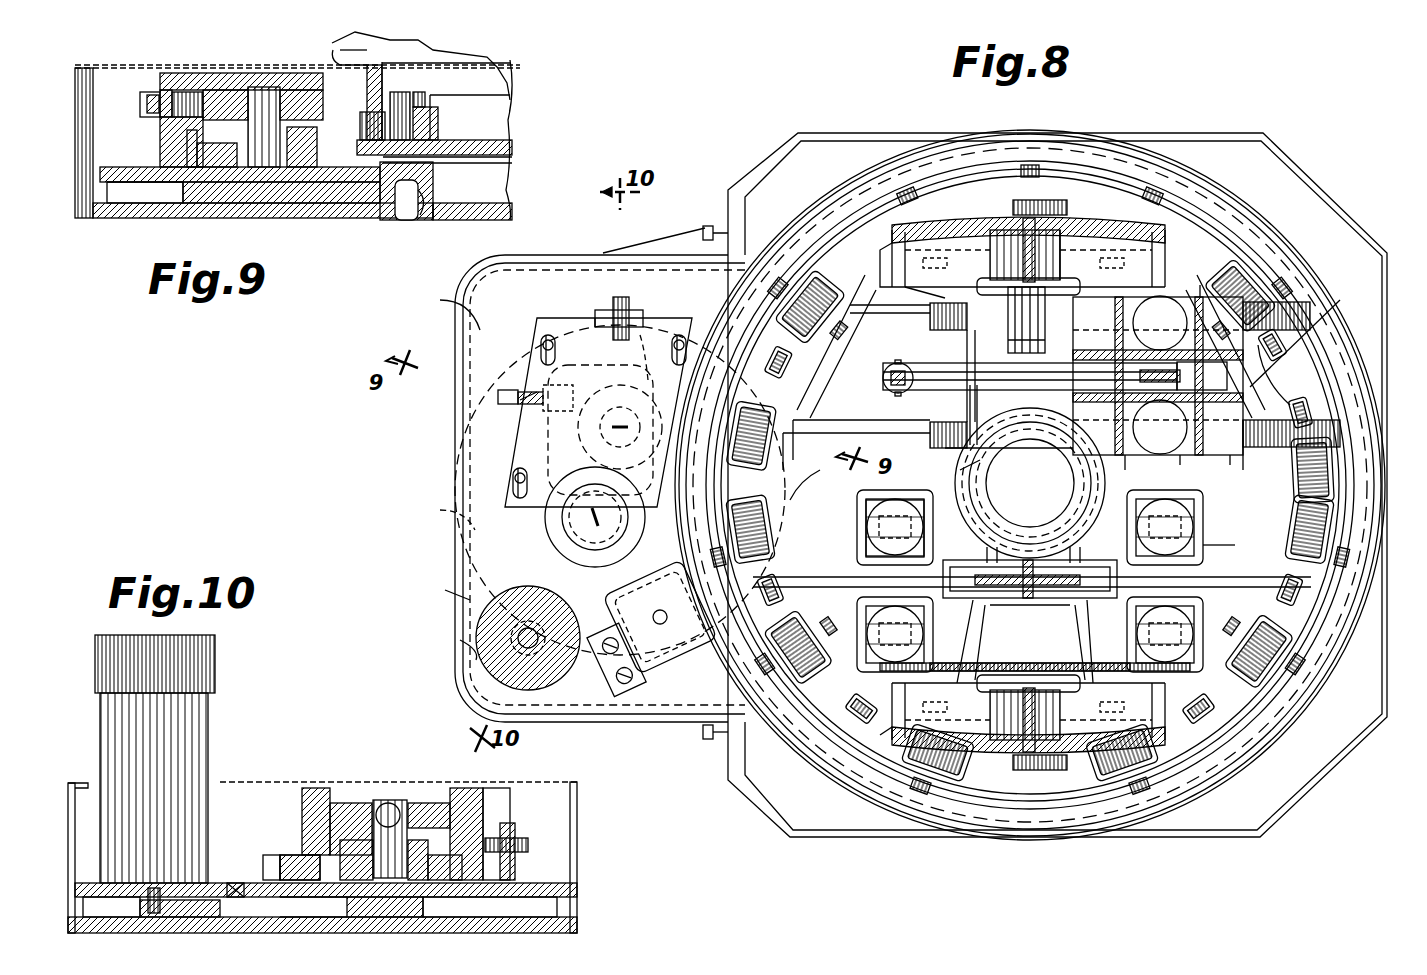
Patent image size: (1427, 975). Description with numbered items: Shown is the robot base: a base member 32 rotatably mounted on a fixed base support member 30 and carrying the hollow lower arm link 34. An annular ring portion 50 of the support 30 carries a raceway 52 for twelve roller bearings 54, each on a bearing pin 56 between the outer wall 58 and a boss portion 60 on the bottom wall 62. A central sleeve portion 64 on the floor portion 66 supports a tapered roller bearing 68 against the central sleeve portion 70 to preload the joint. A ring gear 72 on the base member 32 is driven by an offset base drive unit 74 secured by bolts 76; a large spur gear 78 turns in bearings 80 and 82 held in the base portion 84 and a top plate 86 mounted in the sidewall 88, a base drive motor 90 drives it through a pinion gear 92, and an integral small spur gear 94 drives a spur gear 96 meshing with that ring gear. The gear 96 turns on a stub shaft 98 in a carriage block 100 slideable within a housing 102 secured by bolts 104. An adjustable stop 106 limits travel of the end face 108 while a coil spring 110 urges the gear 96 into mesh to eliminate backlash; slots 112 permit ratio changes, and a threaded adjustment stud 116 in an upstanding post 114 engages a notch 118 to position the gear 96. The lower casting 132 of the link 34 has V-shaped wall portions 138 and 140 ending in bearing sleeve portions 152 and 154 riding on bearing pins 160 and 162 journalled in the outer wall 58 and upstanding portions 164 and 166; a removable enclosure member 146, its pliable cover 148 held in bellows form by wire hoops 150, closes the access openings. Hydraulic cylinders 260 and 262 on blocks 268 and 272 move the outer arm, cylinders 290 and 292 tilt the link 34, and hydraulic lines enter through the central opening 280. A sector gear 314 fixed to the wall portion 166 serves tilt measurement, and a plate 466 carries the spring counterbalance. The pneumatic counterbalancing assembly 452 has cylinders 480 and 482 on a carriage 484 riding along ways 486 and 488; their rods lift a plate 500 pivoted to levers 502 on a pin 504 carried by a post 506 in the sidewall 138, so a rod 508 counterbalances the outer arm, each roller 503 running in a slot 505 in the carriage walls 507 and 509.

In FIG. 8, the base support member 30 is at (1323, 172).
In FIG. 9, the base support member 30 is at (382, 220).
In FIG. 8, the base member 32 is at (1340, 580).
In FIG. 9, the base member 32 is at (512, 148).
In FIG. 8, the turret or lower arm link 34 is at (1070, 225).
In FIG. 9, the upstanding annular ring portion 50 is at (423, 216).
In FIG. 9, the flat roller bearing raceway 52 is at (430, 158).
In FIG. 8, the roller bearings 54 is at (785, 320).
In FIG. 9, the roller bearings 54 is at (402, 98).
In FIG. 8, the bearing pin 56 is at (840, 340).
In FIG. 9, the bearing pin 56 is at (438, 120).
In FIG. 8, the outer wall 58 is at (1345, 490).
In FIG. 9, the outer wall 58 is at (367, 86).
In FIG. 8, the upstanding annular boss portion 60 is at (807, 476).
In FIG. 9, the upstanding annular boss portion 60 is at (425, 98).
In FIG. 8, the bottom wall 62 is at (1226, 558).
In FIG. 9, the bottom wall 62 is at (490, 142).
In FIG. 8, the central sleeve portion 64 is at (1078, 538).
In FIG. 9, the floor portion 66 is at (485, 210).
In FIG. 8, the tapered roller bearing 68 is at (985, 540).
In FIG. 8, the upstanding central sleeve portion 70 is at (956, 468).
In FIG. 8, the ring gear 72 is at (905, 778).
In FIG. 9, the ring gear 72 is at (352, 140).
In FIG. 8, the offset base drive unit 74 is at (458, 555).
In FIG. 9, the offset base drive unit 74 is at (118, 222).
In FIG. 10, the offset base drive unit 74 is at (92, 936).
In FIG. 8, the bolts 76 is at (708, 226).
In FIG. 8, the large spur gear 78 is at (439, 593).
In FIG. 9, the large spur gear 78 is at (180, 193).
In FIG. 10, the large spur gear 78 is at (420, 915).
In FIG. 10, the bearing 80 is at (250, 930).
In FIG. 8, the bearing 82 is at (575, 570).
In FIG. 10, the bearing 82 is at (236, 883).
In FIG. 9, the base portion 84 is at (246, 215).
In FIG. 10, the base portion 84 is at (488, 920).
In FIG. 8, the top plate 86 is at (449, 303).
In FIG. 9, the top plate 86 is at (125, 170).
In FIG. 10, the top plate 86 is at (548, 888).
In FIG. 8, the sidewall 88 is at (439, 519).
In FIG. 9, the sidewall 88 is at (105, 190).
In FIG. 10, the sidewall 88 is at (560, 902).
In FIG. 8, the base drive motor 90 is at (476, 660).
In FIG. 10, the base drive motor 90 is at (98, 672).
In FIG. 8, the pinion gear 92 is at (476, 628).
In FIG. 10, the pinion gear 92 is at (140, 910).
In FIG. 8, the small spur gear 94 is at (570, 535).
In FIG. 10, the small spur gear 94 is at (263, 860).
In FIG. 8, the spur gear 96 is at (650, 340).
In FIG. 9, the spur gear 96 is at (197, 150).
In FIG. 10, the spur gear 96 is at (445, 880).
In FIG. 8, the stub shaft 98 is at (625, 445).
In FIG. 9, the stub shaft 98 is at (264, 170).
In FIG. 10, the stub shaft 98 is at (385, 878).
In FIG. 8, the carriage block 100 is at (695, 585).
In FIG. 9, the carriage block 100 is at (290, 90).
In FIG. 10, the carriage block 100 is at (425, 803).
In FIG. 8, the housing 102 is at (550, 318).
In FIG. 9, the housing 102 is at (165, 73).
In FIG. 10, the housing 102 is at (312, 790).
In FIG. 8, the bolts 104 is at (548, 345).
In FIG. 8, the adjustable stop 106 is at (498, 397).
In FIG. 9, the adjustable stop 106 is at (145, 95).
In FIG. 10, the adjustable stop 106 is at (388, 800).
In FIG. 8, the end face 108 is at (540, 400).
In FIG. 9, the end face 108 is at (228, 90).
In FIG. 8, the coil spring 110 is at (520, 370).
In FIG. 9, the coil spring 110 is at (185, 92).
In FIG. 10, the coil spring 110 is at (352, 803).
In FIG. 8, the slots 112 is at (540, 350).
In FIG. 8, the upstanding post 114 is at (610, 310).
In FIG. 10, the upstanding post 114 is at (515, 860).
In FIG. 8, the threaded adjustment stud 116 is at (625, 297).
In FIG. 10, the threaded adjustment stud 116 is at (528, 843).
In FIG. 8, the notch 118 is at (605, 318).
In FIG. 10, the notch 118 is at (500, 795).
In FIG. 8, the lower casting 132 is at (890, 258).
In FIG. 8, the V-shaped wall portion 138 is at (1000, 230).
In FIG. 8, the V-shaped wall portion 140 is at (1000, 765).
In FIG. 9, the removable enclosure member 146 is at (340, 40).
In FIG. 9, the cover 148 is at (338, 52).
In FIG. 9, the wire hoops 150 is at (400, 42).
In FIG. 8, the bearing sleeve portion 152 is at (1050, 225).
In FIG. 8, the bearing sleeve portion 154 is at (1075, 760).
In FIG. 8, the bearing pin 160 is at (1025, 200).
In FIG. 8, the bearing pin 162 is at (1030, 762).
In FIG. 8, the upstanding portion 164 is at (932, 298).
In FIG. 8, the upstanding wall portion 166 is at (1040, 668).
In FIG. 8, the single acting hydraulic cylinder 260 is at (858, 504).
In FIG. 8, the single acting hydraulic cylinder 262 is at (1220, 455).
In FIG. 8, the block 268 is at (866, 520).
In FIG. 8, the block 272 is at (1205, 520).
In FIG. 8, the central opening 280 is at (1003, 495).
In FIG. 8, the single acting hydraulic cylinder 290 is at (933, 630).
In FIG. 8, the single acting hydraulic cylinder 292 is at (1127, 633).
In FIG. 8, the sector gear 314 is at (900, 672).
In FIG. 8, the pneumatic counterbalancing assembly 452 is at (1340, 300).
In FIG. 8, the plate 466 is at (1015, 598).
In FIG. 8, the pneumatic single acting cylinder 480 is at (1160, 297).
In FIG. 8, the pneumatic single acting cylinder 482 is at (1150, 455).
In FIG. 8, the carriage 484 is at (1258, 388).
In FIG. 8, the way 486 is at (930, 320).
In FIG. 8, the way 488 is at (930, 440).
In FIG. 8, the vertically extending plate 500 is at (1140, 378).
In FIG. 8, the levers 502 is at (948, 392).
In FIG. 8, the roller 503 is at (1202, 376).
In FIG. 8, the pin 504 is at (1028, 430).
In FIG. 8, the slot 505 is at (1130, 375).
In FIG. 8, the inwardly projecting post 506 is at (1008, 340).
In FIG. 8, the wall 507 is at (1185, 300).
In FIG. 8, the rod 508 is at (883, 382).
In FIG. 8, the wall 509 is at (1225, 469).